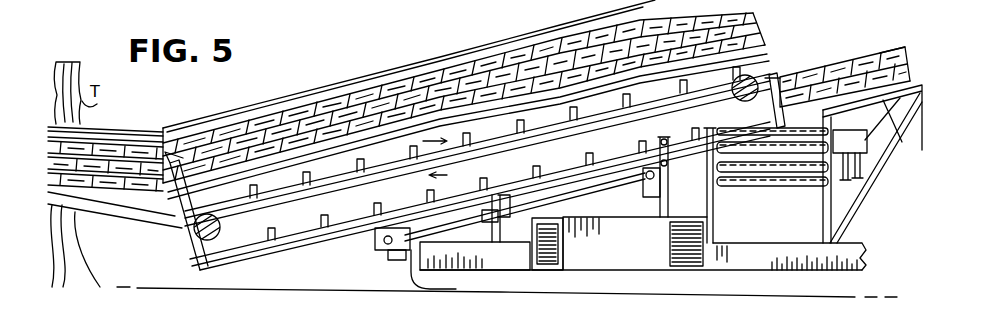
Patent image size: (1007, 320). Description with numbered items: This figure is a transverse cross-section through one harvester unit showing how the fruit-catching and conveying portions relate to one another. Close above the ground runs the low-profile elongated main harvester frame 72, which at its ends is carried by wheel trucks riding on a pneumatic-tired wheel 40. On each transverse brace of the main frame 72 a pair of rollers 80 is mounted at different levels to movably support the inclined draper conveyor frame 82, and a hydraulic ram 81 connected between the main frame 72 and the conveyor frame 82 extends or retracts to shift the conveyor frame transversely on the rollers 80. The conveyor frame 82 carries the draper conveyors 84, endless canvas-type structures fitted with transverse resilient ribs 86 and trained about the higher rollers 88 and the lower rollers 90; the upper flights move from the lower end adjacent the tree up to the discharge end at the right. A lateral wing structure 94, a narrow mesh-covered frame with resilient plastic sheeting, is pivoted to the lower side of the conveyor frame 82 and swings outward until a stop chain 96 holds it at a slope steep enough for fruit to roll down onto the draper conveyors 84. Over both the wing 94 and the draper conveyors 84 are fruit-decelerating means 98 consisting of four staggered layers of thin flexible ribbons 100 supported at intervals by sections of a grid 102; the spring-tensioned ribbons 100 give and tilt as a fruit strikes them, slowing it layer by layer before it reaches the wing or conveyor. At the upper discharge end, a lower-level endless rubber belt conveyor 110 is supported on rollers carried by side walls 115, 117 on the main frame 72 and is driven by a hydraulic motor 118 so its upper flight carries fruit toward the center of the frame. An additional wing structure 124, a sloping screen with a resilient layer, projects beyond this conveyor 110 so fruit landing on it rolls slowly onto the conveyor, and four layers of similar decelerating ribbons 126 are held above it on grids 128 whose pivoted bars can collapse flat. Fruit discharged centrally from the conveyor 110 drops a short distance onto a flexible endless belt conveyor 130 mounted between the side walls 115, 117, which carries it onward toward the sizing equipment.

The wheel 40 is at (455, 277).
The main longitudinally-extending harvester frame 72 is at (650, 263).
The rollers 80 is at (503, 197).
The hydraulic ram 81 is at (590, 190).
The draper conveyor frame 82 is at (353, 223).
The draper conveyors 84 is at (277, 242).
The transverse resilient ribs 86 is at (613, 133).
The higher rollers 88 is at (751, 74).
The rollers 90 is at (213, 242).
The lateral wing structure 94 is at (128, 132).
The stop chain 96 is at (173, 170).
The fruit-decelerating means 98 is at (382, 60).
The ribbons 100 is at (335, 95).
The grid 102 is at (263, 117).
The conveyor 110 is at (758, 140).
The side wall 115 is at (713, 218).
The side wall 117 is at (822, 210).
The hydraulic motor 118 is at (872, 160).
The additional wing structure 124 is at (880, 128).
The decelerating ribbons 126 is at (857, 55).
The grids 128 is at (905, 29).
The flexible endless belt conveyor 130 is at (783, 173).